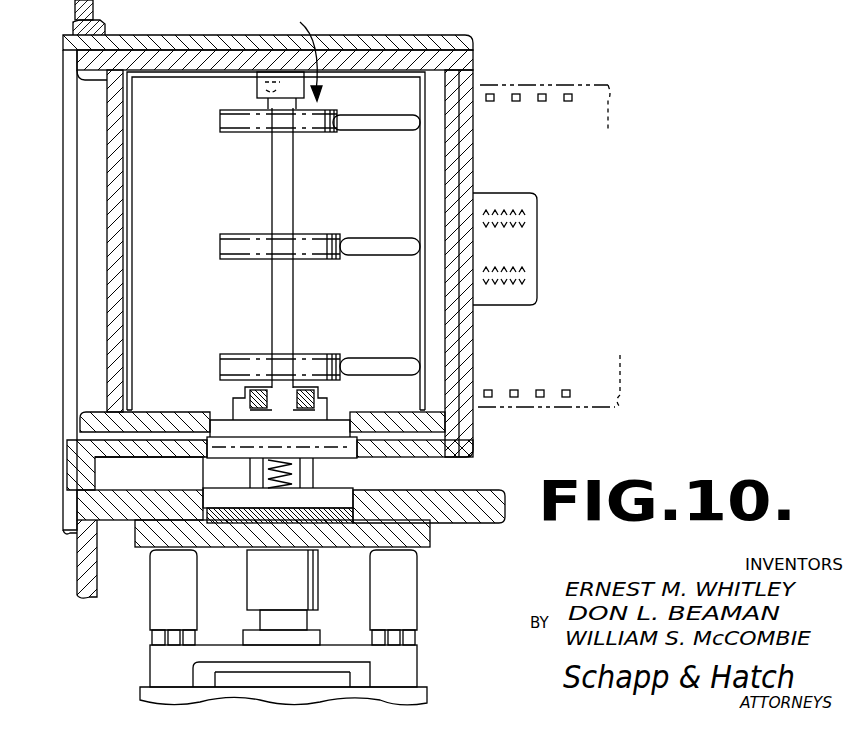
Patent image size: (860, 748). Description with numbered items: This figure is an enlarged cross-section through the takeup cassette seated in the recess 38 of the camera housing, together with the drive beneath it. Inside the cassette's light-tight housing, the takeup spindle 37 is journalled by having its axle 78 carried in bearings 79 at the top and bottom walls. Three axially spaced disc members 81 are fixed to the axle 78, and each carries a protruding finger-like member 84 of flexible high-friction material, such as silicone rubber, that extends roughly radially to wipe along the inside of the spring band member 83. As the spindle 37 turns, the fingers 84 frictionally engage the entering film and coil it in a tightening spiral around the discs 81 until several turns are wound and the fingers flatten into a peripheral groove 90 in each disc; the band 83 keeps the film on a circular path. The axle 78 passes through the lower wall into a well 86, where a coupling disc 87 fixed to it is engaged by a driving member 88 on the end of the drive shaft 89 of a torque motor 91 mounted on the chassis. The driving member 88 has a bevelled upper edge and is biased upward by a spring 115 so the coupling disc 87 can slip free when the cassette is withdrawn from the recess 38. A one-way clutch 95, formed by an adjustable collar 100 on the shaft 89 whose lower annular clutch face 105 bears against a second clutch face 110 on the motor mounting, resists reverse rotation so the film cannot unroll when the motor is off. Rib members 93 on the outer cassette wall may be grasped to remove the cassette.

The takeup spindle 37 is at (292, 52).
The recess 38 is at (460, 60).
The axle 78 is at (272, 178).
The bearings 79 is at (257, 93).
The disc members 81 is at (224, 133).
The spring band member 83 is at (130, 222).
The finger-like member 84 is at (370, 132).
The well 86 is at (375, 410).
The coupling disc 87 is at (330, 424).
The driving member 88 is at (205, 456).
The drive shaft 89 is at (248, 592).
The peripheral groove 90 is at (222, 113).
The torque motor 91 is at (140, 690).
The rib members 93 is at (80, 232).
The one-way clutch 95 is at (352, 517).
The adjustable collar 100 is at (347, 500).
The annular clutch face 105 is at (208, 495).
The second clutch face 110 is at (236, 543).
The spring 115 is at (296, 476).